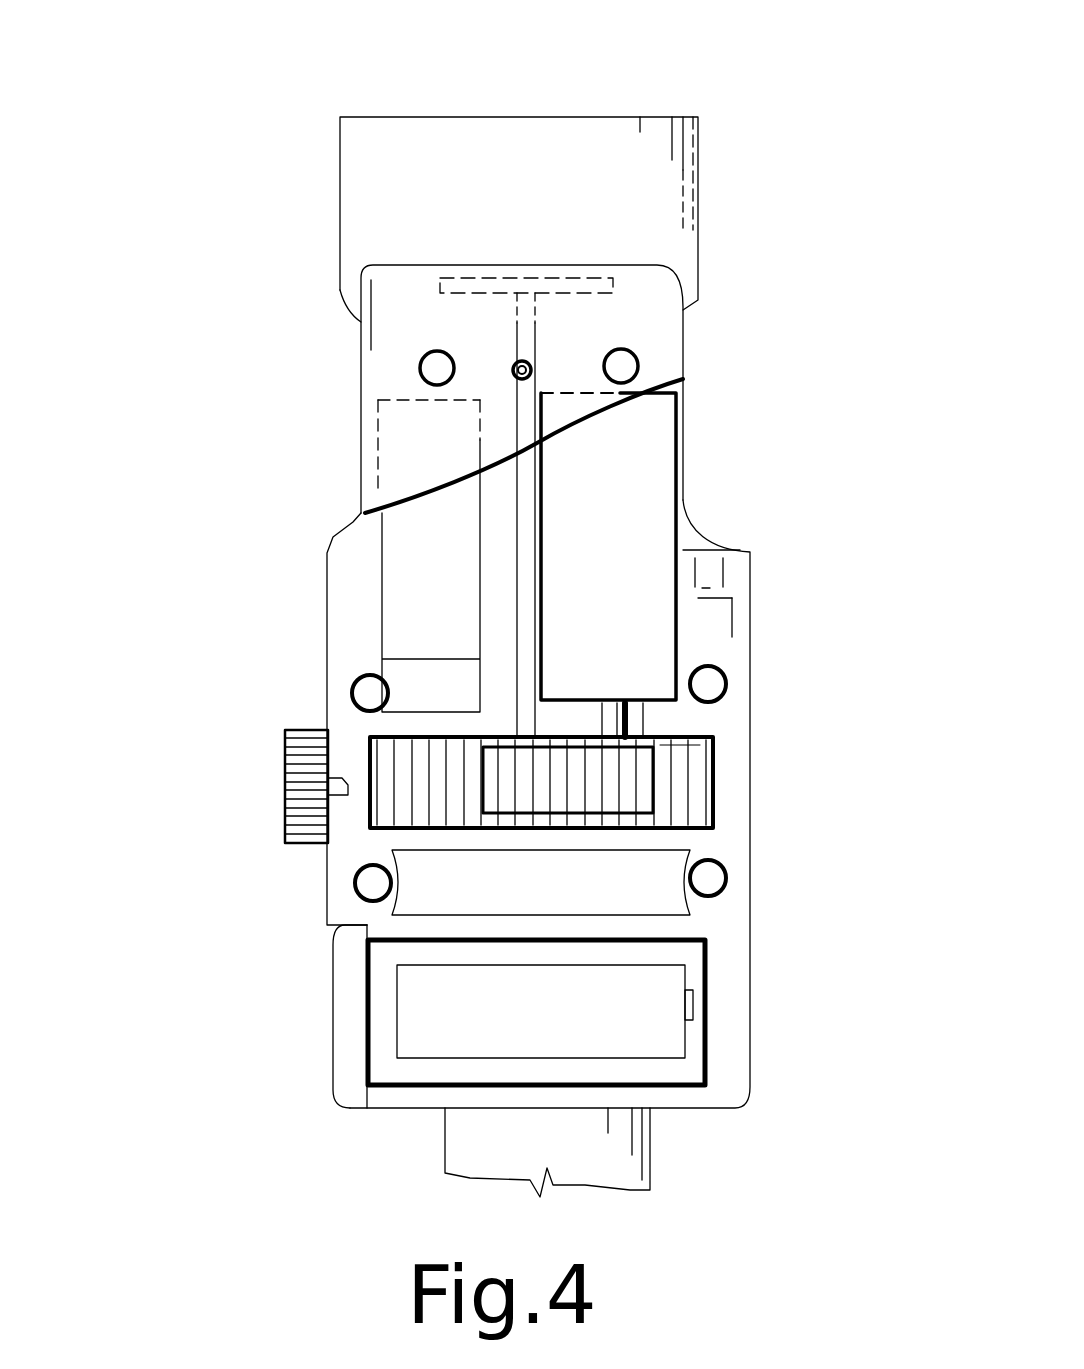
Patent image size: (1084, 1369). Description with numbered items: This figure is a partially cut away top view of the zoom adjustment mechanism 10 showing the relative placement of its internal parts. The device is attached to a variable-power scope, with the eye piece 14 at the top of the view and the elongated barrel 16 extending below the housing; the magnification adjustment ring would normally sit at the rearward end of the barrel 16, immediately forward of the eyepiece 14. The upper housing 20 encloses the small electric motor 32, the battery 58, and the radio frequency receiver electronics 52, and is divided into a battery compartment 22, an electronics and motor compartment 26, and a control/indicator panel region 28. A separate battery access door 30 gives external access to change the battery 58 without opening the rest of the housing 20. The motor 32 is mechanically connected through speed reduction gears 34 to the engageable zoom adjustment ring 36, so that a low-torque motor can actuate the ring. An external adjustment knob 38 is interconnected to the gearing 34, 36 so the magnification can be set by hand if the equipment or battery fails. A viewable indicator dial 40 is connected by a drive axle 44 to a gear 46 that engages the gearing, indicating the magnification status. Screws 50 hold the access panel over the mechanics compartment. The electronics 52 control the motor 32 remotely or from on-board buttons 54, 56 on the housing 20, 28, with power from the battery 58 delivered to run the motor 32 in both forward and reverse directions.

The zoom adjustment mechanism 10 is at (762, 511).
The eye piece 14 is at (378, 205).
The barrel 16 is at (500, 1143).
The upper housing 20 is at (765, 597).
The battery compartment 22 is at (710, 1028).
The electronics and motor compartment 26 is at (370, 492).
The control/indicator panel region 28 is at (360, 345).
The battery access door 30 is at (356, 1025).
The electric motor 32 is at (627, 484).
The gears 34 is at (630, 775).
The zoom adjustment ring 36 is at (680, 800).
The external adjustment knob 38 is at (284, 777).
The indicator dial 40 is at (491, 283).
The drive axle 44 is at (523, 525).
The gear 46 is at (497, 787).
The screws 50 is at (352, 692).
The electronics 52 is at (425, 595).
The on-board button 54 is at (420, 366).
The on-board button 56 is at (630, 361).
The battery 58 is at (600, 996).